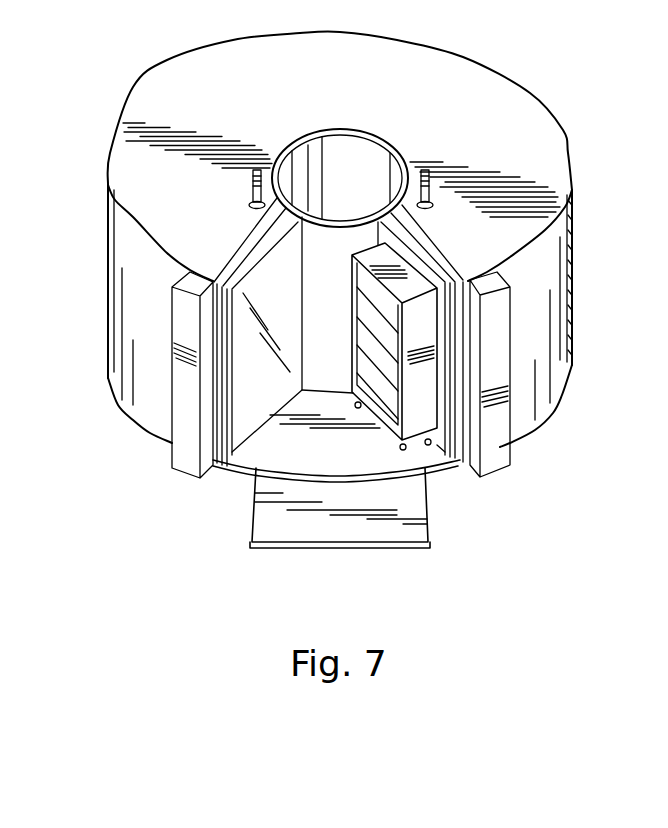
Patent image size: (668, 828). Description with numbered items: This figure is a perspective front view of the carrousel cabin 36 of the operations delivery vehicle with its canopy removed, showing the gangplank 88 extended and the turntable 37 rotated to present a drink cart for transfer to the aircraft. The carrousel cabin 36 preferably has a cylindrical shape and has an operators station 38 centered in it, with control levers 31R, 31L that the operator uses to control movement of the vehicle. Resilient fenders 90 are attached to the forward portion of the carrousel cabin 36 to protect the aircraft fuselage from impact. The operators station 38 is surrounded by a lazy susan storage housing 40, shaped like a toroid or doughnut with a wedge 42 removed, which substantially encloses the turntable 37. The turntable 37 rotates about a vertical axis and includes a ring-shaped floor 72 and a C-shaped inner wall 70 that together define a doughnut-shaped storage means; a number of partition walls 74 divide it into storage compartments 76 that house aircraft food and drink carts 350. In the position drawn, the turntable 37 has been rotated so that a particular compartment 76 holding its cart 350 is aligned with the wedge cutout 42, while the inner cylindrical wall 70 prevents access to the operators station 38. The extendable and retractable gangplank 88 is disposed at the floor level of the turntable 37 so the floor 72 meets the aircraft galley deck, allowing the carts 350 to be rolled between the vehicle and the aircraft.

The carrousel cabin 36 is at (569, 277).
The operators station 38 is at (345, 170).
The inner wall 70 is at (322, 215).
The control lever 31R is at (252, 201).
The control lever 31L is at (430, 203).
The lazy susan storage housing 40 is at (252, 248).
The partition walls 74 is at (397, 224).
The storage compartments 76 is at (197, 384).
The wedge 42 is at (257, 361).
The resilient fenders 90 is at (185, 478).
The turntable 37 is at (282, 445).
The turntable floor 72 is at (310, 452).
The gangplank 88 is at (428, 531).
The food and drink carts 350 is at (387, 429).